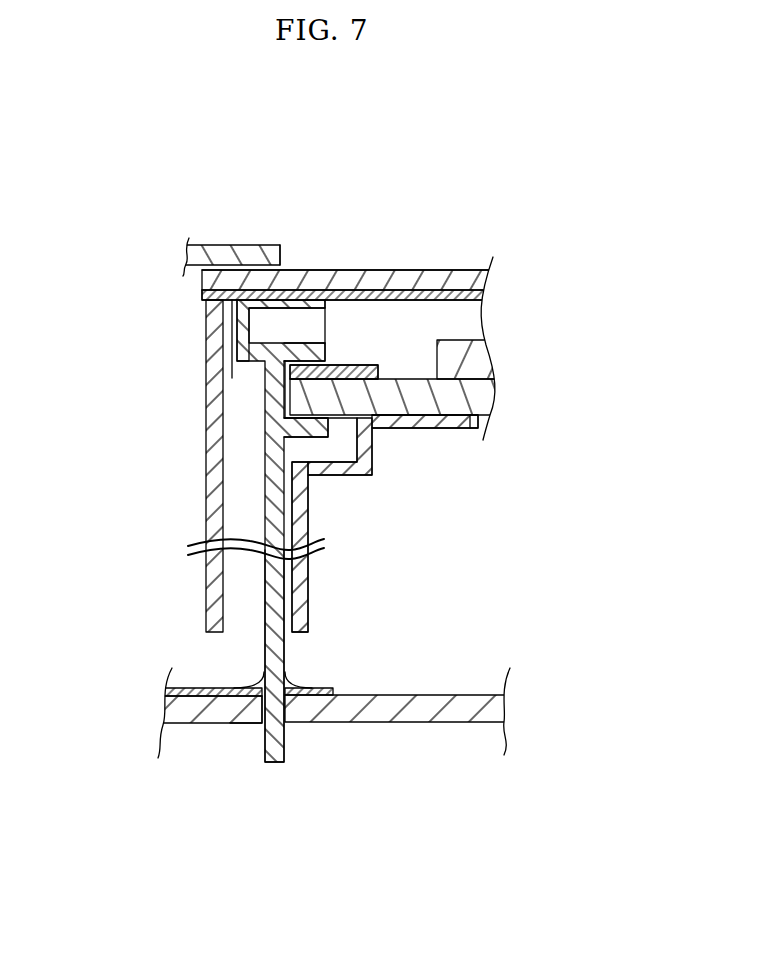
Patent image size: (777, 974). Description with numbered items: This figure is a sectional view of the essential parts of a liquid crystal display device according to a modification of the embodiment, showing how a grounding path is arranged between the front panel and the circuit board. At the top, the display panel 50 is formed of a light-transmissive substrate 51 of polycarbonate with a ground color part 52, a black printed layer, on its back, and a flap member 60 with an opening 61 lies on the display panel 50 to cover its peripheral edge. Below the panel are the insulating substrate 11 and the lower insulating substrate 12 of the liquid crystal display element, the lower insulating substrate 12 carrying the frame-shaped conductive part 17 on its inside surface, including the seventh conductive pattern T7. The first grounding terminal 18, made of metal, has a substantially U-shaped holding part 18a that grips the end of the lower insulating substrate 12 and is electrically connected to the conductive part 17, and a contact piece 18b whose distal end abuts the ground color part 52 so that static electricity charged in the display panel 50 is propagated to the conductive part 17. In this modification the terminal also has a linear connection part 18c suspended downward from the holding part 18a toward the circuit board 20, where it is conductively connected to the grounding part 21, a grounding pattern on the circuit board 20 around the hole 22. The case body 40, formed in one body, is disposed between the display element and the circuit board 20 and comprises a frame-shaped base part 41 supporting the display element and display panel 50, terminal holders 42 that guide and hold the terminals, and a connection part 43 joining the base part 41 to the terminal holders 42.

The insulating substrate 11 is at (479, 362).
The lower insulating substrate 12 is at (470, 397).
The conductive part 17 is at (252, 374).
The seventh conductive pattern T7 is at (288, 371).
The first grounding terminal 18 is at (205, 464).
The holding part 18a is at (312, 432).
The contact piece 18b is at (289, 304).
The linear connection part 18c is at (273, 580).
The circuit board 20 is at (335, 727).
The grounding part 21 is at (333, 692).
The hole 22 is at (253, 712).
The case body 40 is at (306, 466).
The base part 41 is at (456, 424).
The terminal holder 42 is at (212, 490).
The connection part 43 is at (372, 454).
The display panel 50 is at (199, 288).
The light-transmissive substrate 51 is at (455, 282).
The ground color part 52 is at (485, 295).
The flap member 60 is at (218, 248).
The opening 61 is at (285, 257).